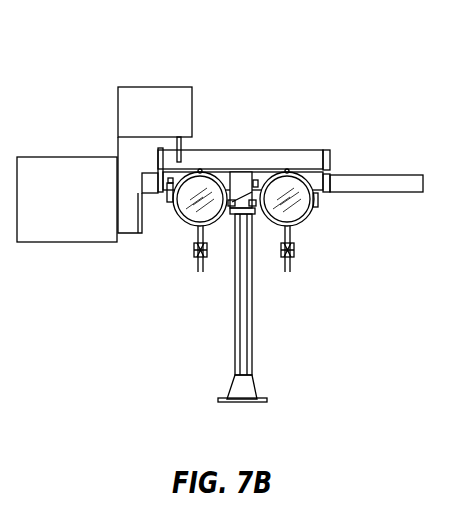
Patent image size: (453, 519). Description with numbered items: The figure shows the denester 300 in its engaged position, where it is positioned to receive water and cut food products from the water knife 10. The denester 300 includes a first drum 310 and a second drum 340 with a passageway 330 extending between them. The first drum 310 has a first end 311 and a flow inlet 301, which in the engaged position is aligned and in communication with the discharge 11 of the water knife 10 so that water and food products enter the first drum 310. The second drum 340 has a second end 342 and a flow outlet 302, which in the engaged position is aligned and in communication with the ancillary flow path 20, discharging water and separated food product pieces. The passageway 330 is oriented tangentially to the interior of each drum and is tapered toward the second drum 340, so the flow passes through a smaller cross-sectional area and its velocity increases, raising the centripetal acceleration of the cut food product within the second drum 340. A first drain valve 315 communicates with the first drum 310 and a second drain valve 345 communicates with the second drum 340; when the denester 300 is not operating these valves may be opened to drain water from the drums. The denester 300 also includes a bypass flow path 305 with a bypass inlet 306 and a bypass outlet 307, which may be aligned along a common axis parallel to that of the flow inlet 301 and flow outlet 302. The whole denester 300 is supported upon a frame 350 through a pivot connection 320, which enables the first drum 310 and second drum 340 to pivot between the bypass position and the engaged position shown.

The denester 300 is at (330, 53).
The water knife 10 is at (62, 158).
The discharge 11 is at (145, 177).
The ancillary flow path 20 is at (377, 176).
The flow inlet 301 is at (165, 142).
The flow outlet 302 is at (327, 190).
The bypass flow path 305 is at (250, 150).
The bypass inlet 306 is at (163, 143).
The bypass outlet 307 is at (323, 150).
The first drum 310 is at (138, 236).
The first end 311 is at (178, 213).
The first drain valve 315 is at (192, 268).
The pivot connection 320 is at (235, 213).
The passageway 330 is at (245, 177).
The second drum 340 is at (345, 214).
The second end 342 is at (298, 215).
The second drain valve 345 is at (288, 268).
The frame 350 is at (245, 347).